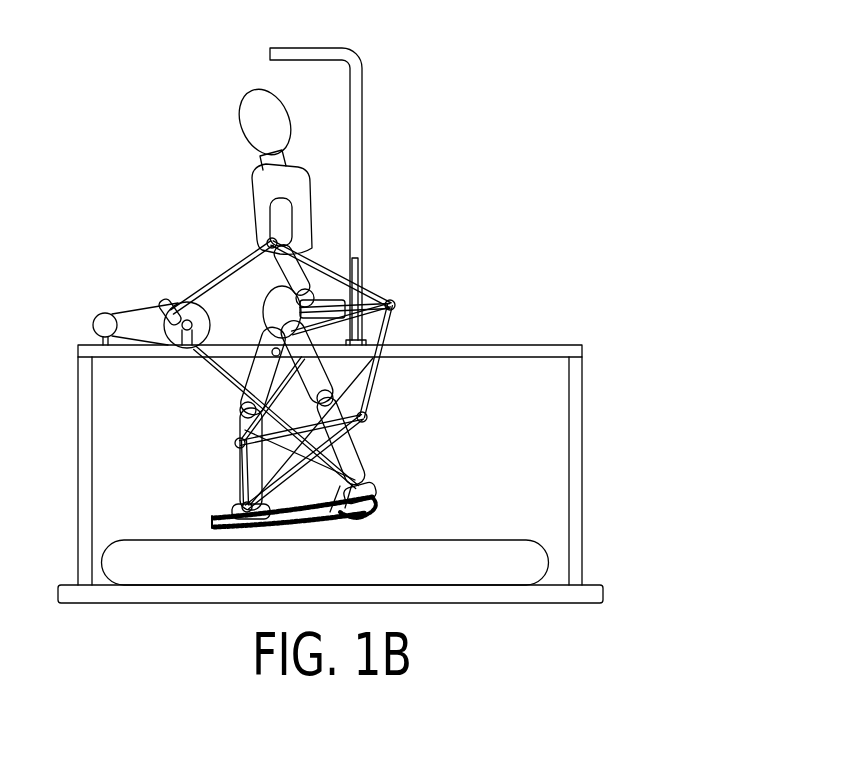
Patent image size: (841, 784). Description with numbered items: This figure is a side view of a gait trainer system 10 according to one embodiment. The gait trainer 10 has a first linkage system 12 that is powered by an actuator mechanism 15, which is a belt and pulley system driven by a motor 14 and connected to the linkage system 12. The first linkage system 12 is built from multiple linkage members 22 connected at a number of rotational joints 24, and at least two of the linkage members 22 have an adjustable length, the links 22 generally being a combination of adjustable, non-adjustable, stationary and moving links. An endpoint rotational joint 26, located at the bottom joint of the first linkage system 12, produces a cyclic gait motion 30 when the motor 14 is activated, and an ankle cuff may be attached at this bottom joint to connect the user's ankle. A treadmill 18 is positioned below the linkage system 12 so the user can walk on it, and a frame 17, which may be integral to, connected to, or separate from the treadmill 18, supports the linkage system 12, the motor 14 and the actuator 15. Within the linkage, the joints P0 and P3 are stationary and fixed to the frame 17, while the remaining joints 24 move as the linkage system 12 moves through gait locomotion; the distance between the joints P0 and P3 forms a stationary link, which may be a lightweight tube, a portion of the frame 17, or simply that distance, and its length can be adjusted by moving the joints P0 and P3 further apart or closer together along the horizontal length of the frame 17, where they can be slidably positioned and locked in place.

The gait trainer system 10 is at (369, 328).
The first linkage system 12 is at (384, 291).
The motor 14 is at (136, 275).
The actuator mechanism 15 is at (132, 350).
The frame 17 is at (377, 474).
The treadmill 18 is at (379, 491).
The linkage members 22 is at (393, 327).
The rotational joints 24 is at (328, 376).
The endpoint rotational joint 26 is at (238, 500).
The cyclic gait motion 30 is at (438, 561).
The stationary joint P0 is at (197, 318).
The stationary joint P3 is at (275, 360).